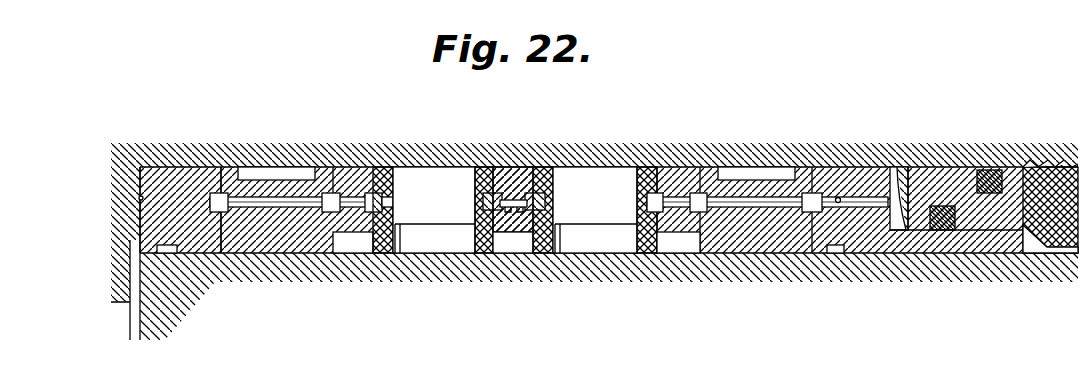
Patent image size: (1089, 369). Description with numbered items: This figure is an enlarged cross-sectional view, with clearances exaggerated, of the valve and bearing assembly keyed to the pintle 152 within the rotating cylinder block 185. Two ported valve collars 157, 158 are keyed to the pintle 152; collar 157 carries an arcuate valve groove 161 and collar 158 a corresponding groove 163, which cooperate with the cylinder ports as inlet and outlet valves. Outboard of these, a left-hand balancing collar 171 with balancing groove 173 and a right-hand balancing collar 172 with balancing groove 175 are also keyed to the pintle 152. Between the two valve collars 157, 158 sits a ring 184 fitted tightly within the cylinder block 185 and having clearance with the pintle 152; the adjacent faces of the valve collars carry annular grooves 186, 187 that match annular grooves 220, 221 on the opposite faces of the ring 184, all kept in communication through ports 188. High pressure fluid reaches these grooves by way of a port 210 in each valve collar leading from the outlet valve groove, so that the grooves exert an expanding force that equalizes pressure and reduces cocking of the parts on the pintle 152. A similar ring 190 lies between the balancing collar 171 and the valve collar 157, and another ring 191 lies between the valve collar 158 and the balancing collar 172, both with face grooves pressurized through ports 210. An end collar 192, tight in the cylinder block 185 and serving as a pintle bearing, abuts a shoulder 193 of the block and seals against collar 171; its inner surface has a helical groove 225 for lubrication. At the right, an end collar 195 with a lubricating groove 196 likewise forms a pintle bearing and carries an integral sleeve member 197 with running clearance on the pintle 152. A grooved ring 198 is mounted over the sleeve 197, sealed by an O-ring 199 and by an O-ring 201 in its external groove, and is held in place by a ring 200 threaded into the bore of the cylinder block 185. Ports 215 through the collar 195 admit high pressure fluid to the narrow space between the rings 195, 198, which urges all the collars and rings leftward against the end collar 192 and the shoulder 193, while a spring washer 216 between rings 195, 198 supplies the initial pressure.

The pintle 152 is at (298, 270).
The collar 157 is at (482, 178).
The collar 158 is at (642, 178).
The arcuate valve groove 161 is at (400, 182).
The arcuate valve groove 163 is at (620, 184).
The balancing collar 171 is at (285, 218).
The balancing collar 172 is at (763, 218).
The balancing groove 173 is at (258, 180).
The balancing groove 175 is at (737, 177).
The ring 184 is at (513, 177).
The cylinder block 185 is at (181, 156).
The annular groove 186 is at (384, 199).
The annular groove 187 is at (327, 197).
The ports 188 is at (518, 198).
The ring 190 is at (355, 172).
The ring 191 is at (677, 175).
The end collar 192 is at (156, 227).
The shoulder 193 is at (139, 198).
The end collar 195 is at (860, 173).
The lubricating groove 196 is at (835, 255).
The sleeve member 197 is at (1004, 247).
The grooved ring 198 is at (948, 177).
The O-ring 199 is at (942, 232).
The ring 200 is at (1047, 172).
The O-ring 201 is at (995, 175).
The port 210 is at (552, 198).
The ports 215 is at (839, 197).
The spring washer 216 is at (902, 178).
The annular groove 220 is at (508, 207).
The annular groove 221 is at (521, 207).
The helical groove 225 is at (168, 254).